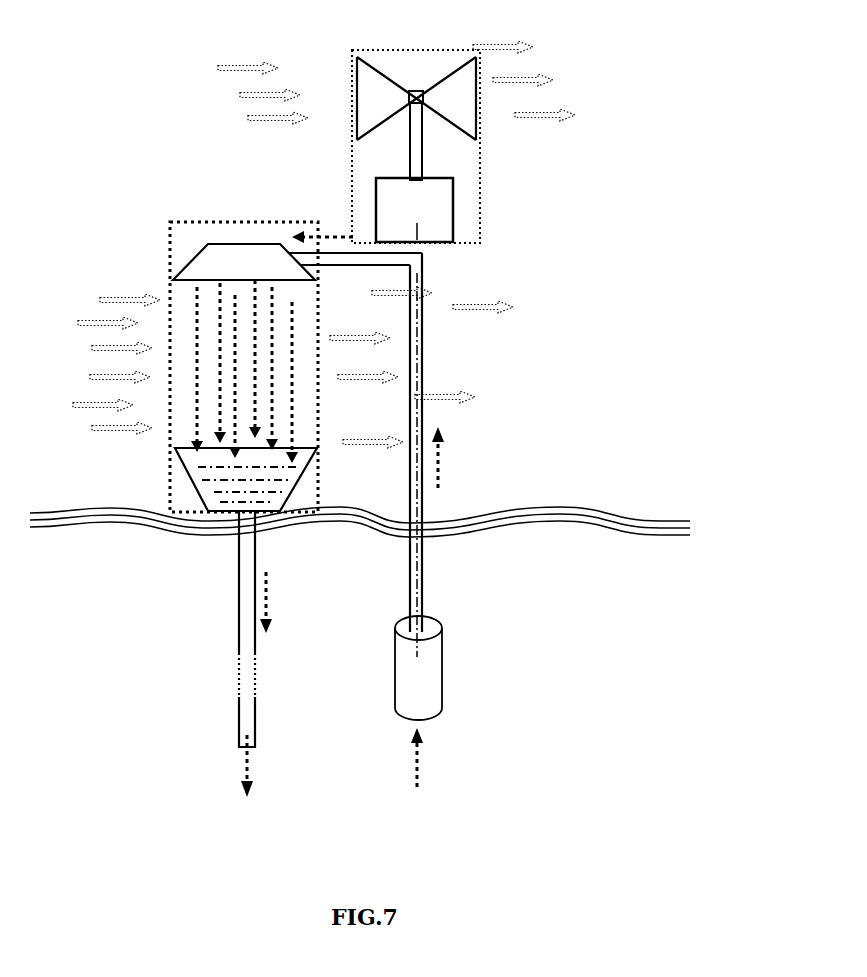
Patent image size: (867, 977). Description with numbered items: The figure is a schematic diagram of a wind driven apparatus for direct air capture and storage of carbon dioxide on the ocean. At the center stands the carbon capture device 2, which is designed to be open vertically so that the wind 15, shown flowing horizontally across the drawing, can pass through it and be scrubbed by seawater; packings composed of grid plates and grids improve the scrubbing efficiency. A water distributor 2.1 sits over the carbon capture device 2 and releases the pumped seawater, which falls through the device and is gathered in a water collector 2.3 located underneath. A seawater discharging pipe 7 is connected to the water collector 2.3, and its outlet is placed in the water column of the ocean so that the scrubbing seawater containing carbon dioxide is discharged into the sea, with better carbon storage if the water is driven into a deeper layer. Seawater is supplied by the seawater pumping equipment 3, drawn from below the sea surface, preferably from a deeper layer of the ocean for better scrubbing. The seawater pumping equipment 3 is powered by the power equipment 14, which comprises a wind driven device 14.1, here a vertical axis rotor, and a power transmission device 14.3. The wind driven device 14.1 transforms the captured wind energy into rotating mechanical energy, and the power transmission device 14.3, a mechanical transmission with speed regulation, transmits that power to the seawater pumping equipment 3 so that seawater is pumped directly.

The carbon capture device 2 is at (178, 230).
The water distributor 2.1 is at (215, 255).
The water collector 2.3 is at (207, 490).
The seawater pumping equipment 3 is at (435, 690).
The seawater discharging pipe 7 is at (247, 593).
The power equipment 14 is at (412, 63).
The wind driven device 14.1 is at (365, 85).
The power transmission device 14.3 is at (438, 210).
The wind 15 is at (103, 322).